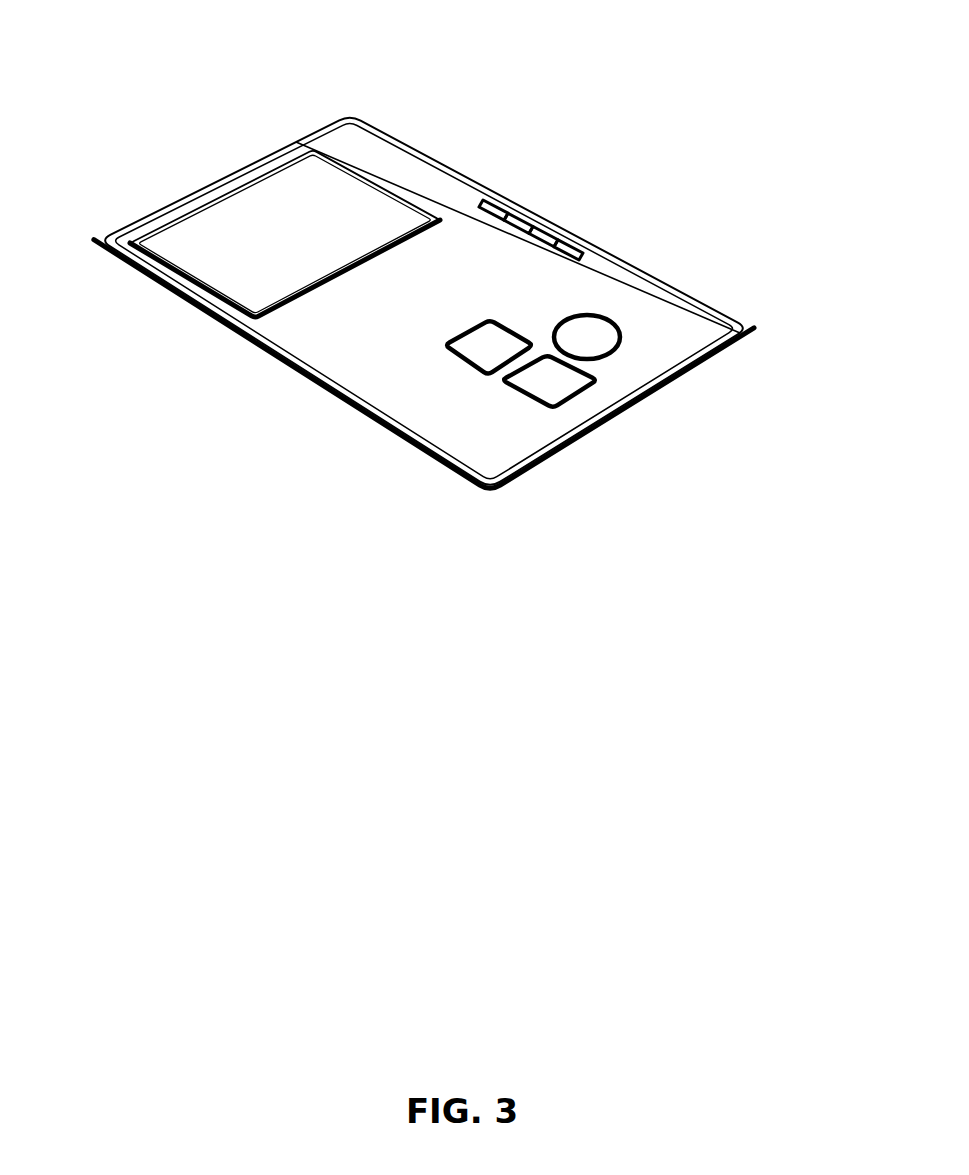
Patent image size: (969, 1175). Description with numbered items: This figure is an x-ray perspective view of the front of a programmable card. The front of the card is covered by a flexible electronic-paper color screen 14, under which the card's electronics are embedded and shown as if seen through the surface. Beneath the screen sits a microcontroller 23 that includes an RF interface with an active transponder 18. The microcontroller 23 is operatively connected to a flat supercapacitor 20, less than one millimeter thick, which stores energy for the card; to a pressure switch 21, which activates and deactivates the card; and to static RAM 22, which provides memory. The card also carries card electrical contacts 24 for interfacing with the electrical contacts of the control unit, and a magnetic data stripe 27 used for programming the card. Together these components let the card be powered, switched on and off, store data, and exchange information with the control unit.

The flexible electronic paper color screen 14 is at (390, 298).
The supercapacitor 20 is at (287, 224).
The pressure switch 21 is at (590, 333).
The static RAM 22 is at (493, 345).
The microcontroller 23 is at (653, 446).
The active transponder 18 is at (553, 378).
The card electrical contacts 24 is at (547, 213).
The magnetic data stripe 27 is at (697, 347).